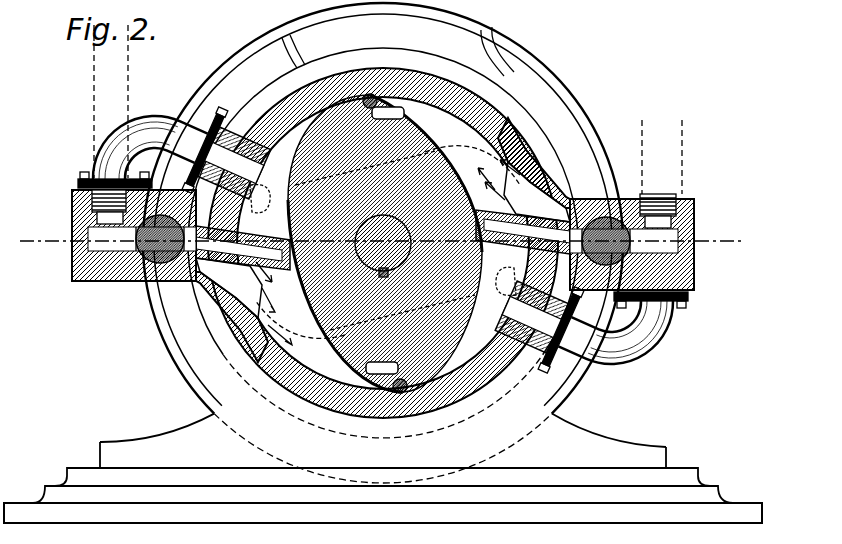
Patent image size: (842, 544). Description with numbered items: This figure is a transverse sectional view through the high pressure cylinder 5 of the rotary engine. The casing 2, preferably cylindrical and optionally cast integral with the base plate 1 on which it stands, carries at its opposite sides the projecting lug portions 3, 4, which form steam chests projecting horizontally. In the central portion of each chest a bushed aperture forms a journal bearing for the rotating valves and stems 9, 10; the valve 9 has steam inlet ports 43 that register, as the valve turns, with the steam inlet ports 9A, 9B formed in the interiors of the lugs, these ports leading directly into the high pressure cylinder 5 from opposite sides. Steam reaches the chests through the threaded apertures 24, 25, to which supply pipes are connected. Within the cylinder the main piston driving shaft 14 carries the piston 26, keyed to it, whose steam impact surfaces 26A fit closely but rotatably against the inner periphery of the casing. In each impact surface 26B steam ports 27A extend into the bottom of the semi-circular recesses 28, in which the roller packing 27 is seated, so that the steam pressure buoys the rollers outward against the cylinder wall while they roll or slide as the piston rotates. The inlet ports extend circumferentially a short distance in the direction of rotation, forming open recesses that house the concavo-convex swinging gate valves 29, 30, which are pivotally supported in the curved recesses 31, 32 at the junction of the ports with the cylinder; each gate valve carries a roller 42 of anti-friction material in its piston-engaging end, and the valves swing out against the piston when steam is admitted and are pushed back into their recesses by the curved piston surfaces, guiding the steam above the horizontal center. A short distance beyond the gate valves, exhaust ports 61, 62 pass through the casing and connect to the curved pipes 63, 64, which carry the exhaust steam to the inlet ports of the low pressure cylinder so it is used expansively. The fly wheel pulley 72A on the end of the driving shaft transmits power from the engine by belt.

The base plate 1 is at (600, 442).
The casing 2 is at (286, 418).
The lug portion 3 is at (72, 255).
The lug portion 4 is at (698, 262).
The high pressure cylinder 5 is at (385, 243).
The rotating valve 9 is at (140, 283).
The steam inlet port 9A is at (100, 282).
The steam inlet port 9B is at (696, 228).
The rotating valve 10 is at (652, 198).
The main piston driving shaft 14 is at (336, 280).
The aperture 24 is at (92, 205).
The aperture 25 is at (680, 194).
The piston 26 is at (352, 342).
The steam impact surfaces 26A is at (387, 257).
The steam impact surface 26B is at (440, 150).
The roller packing 27 is at (395, 108).
The steam ports 27A is at (390, 246).
The semi-circular recesses 28 is at (386, 68).
The swinging valve 29 is at (229, 287).
The swinging valve 30 is at (523, 236).
The curved recess 31 is at (243, 246).
The curved recess 32 is at (552, 205).
The roller 42 is at (380, 237).
The steam inlet port 43 is at (383, 240).
The exhaust port 61 is at (261, 191).
The exhaust port 62 is at (526, 300).
The curved pipe 63 is at (160, 116).
The curved pipe 64 is at (648, 352).
The fly wheel pulley 72A is at (556, 63).